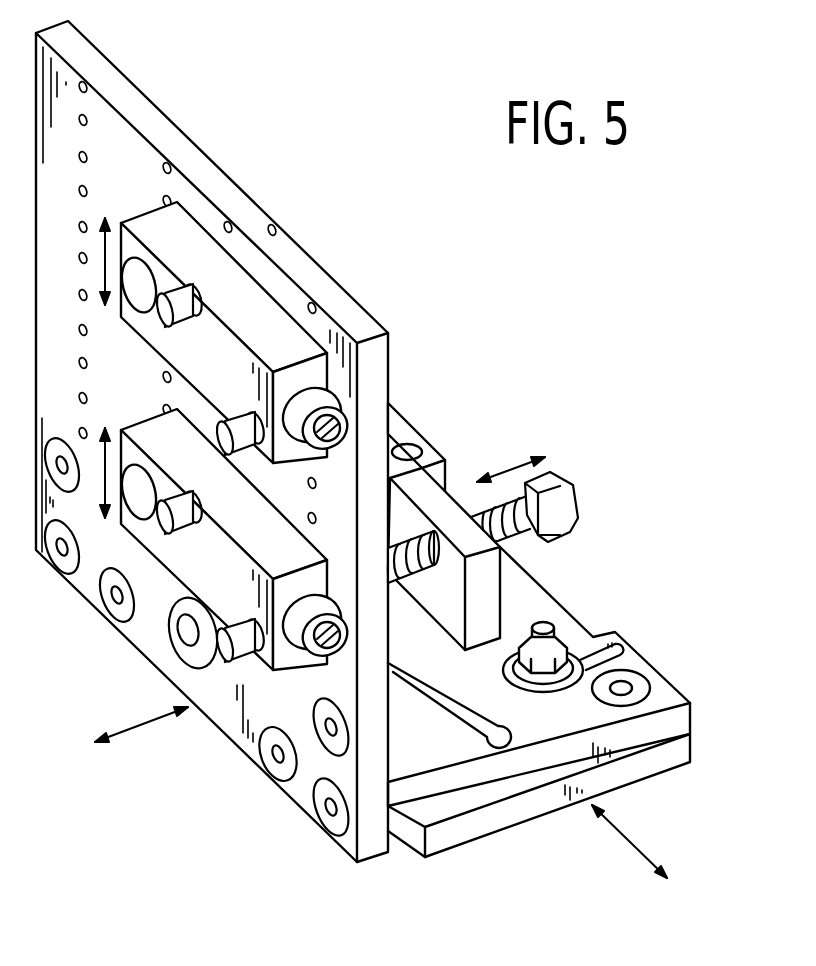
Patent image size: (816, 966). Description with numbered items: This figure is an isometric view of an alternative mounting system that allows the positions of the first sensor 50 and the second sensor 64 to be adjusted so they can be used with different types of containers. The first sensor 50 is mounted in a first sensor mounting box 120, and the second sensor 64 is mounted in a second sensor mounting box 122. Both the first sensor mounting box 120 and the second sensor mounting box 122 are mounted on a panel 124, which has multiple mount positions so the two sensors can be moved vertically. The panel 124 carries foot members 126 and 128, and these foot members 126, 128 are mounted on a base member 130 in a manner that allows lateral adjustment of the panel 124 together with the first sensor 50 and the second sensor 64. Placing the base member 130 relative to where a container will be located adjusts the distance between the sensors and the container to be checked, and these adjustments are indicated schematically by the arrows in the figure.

The panel 124 is at (271, 230).
The first sensor mounting box 120 is at (277, 322).
The second sensor mounting box 122 is at (190, 570).
The first sensor 50 is at (313, 403).
The second sensor 64 is at (293, 648).
The foot member 128 is at (403, 430).
The foot member 126 is at (662, 690).
The base member 130 is at (512, 817).